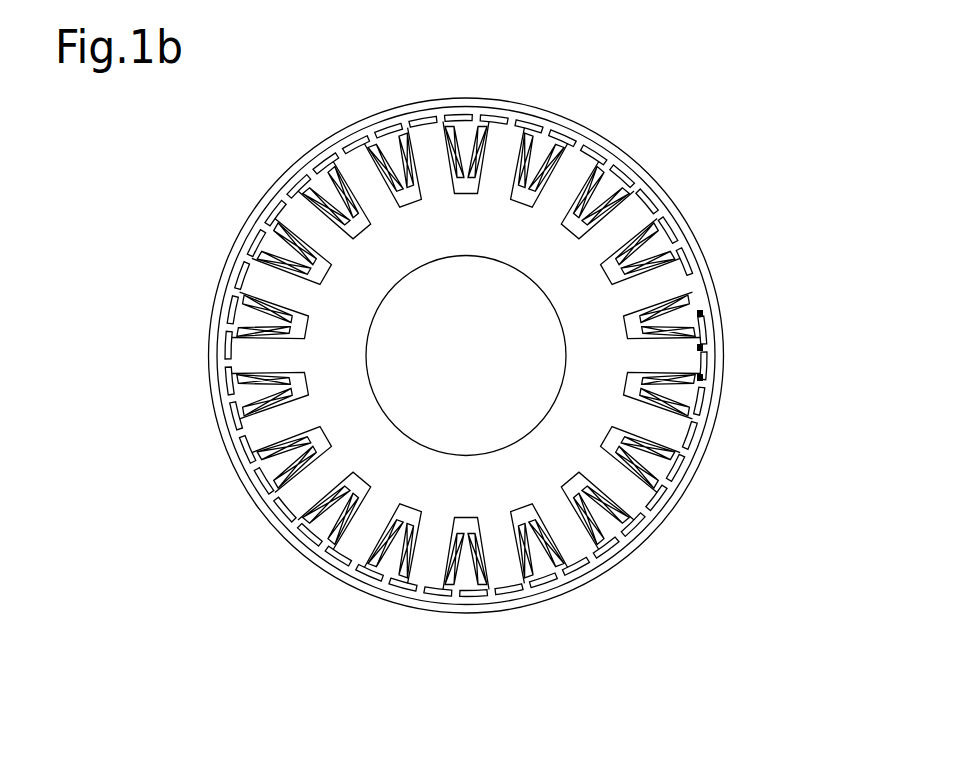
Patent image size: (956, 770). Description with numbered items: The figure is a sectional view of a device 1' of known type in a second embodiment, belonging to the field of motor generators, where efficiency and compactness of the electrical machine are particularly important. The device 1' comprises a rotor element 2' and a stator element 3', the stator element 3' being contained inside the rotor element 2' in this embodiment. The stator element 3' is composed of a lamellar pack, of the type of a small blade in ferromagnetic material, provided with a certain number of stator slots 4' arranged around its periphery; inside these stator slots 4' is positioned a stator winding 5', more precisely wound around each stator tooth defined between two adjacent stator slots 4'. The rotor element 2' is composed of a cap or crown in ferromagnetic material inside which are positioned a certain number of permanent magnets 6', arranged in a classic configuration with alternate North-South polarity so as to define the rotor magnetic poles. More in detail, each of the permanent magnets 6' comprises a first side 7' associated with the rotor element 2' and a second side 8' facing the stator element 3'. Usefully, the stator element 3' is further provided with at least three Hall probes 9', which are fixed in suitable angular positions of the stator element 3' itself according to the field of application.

The device 1' is at (517, 341).
The rotor element 2' is at (466, 327).
The stator element 3' is at (423, 356).
The stator slots 4' is at (466, 341).
The stator winding 5' is at (722, 449).
The permanent magnets 6' is at (633, 570).
The first side 7' is at (517, 355).
The second side 8' is at (691, 164).
The Hall probes 9' is at (760, 345).